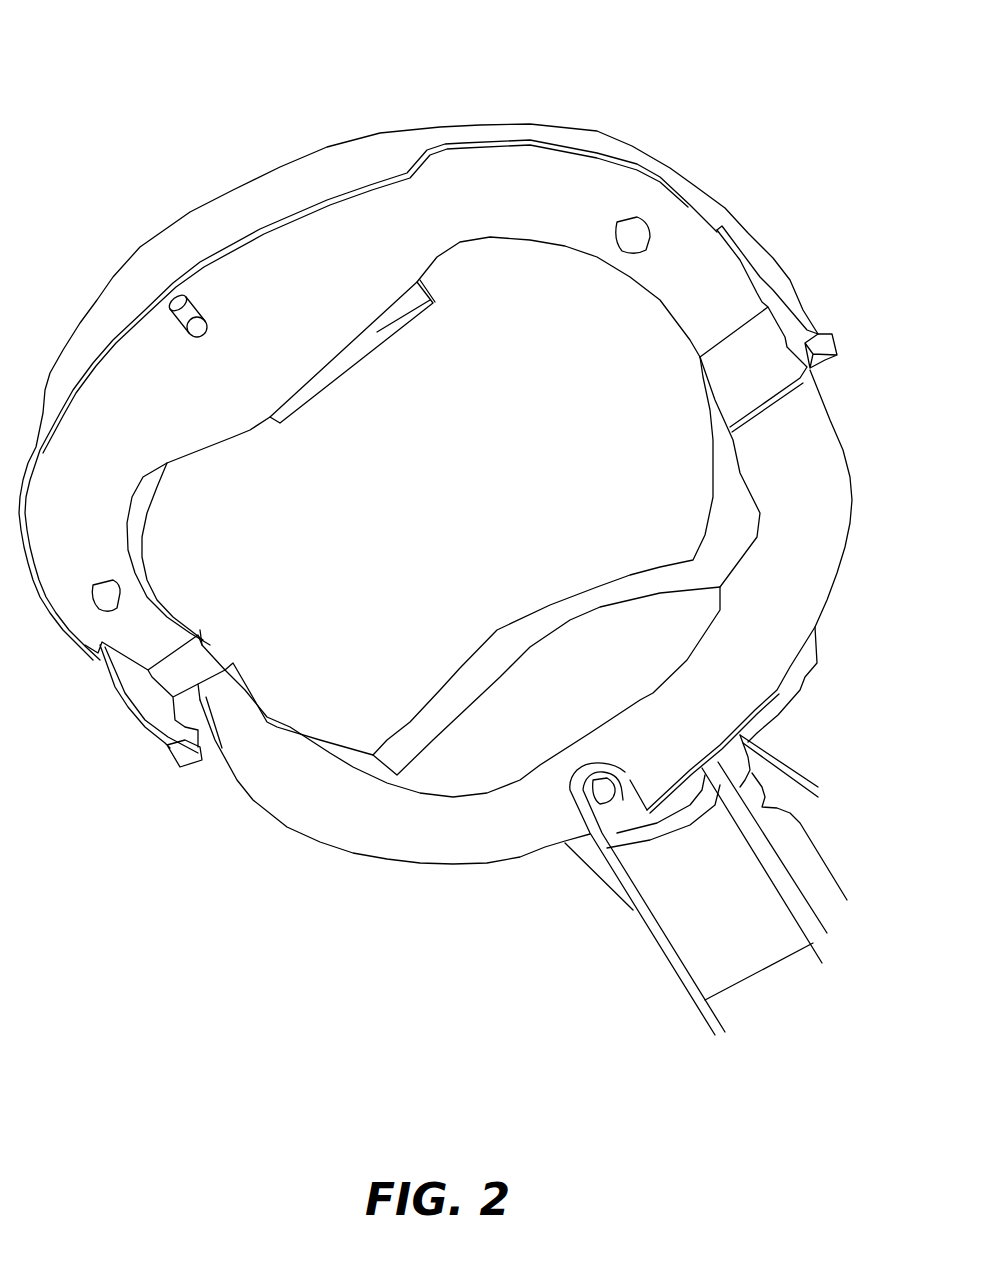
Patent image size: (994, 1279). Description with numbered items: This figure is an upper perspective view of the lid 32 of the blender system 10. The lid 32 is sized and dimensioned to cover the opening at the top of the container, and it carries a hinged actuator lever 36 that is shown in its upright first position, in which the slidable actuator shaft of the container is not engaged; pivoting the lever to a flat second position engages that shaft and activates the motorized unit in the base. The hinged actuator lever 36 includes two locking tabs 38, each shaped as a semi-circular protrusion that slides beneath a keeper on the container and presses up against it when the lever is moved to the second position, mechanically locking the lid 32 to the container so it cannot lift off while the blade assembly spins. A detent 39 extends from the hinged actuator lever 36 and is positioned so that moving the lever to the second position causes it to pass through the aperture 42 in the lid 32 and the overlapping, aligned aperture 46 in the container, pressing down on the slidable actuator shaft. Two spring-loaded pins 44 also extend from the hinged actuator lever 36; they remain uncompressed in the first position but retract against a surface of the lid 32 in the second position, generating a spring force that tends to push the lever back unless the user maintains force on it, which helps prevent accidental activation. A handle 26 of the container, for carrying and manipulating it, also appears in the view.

The blender system 10 is at (116, 60).
The handle 26 is at (668, 957).
The lid 32 is at (752, 192).
The hinged actuator lever 36 is at (235, 190).
The locking tab 38 is at (800, 307).
The detent 39 is at (200, 327).
The aperture 42 is at (568, 792).
The spring-loaded pin 44 is at (630, 242).
The aperture 46 is at (612, 793).